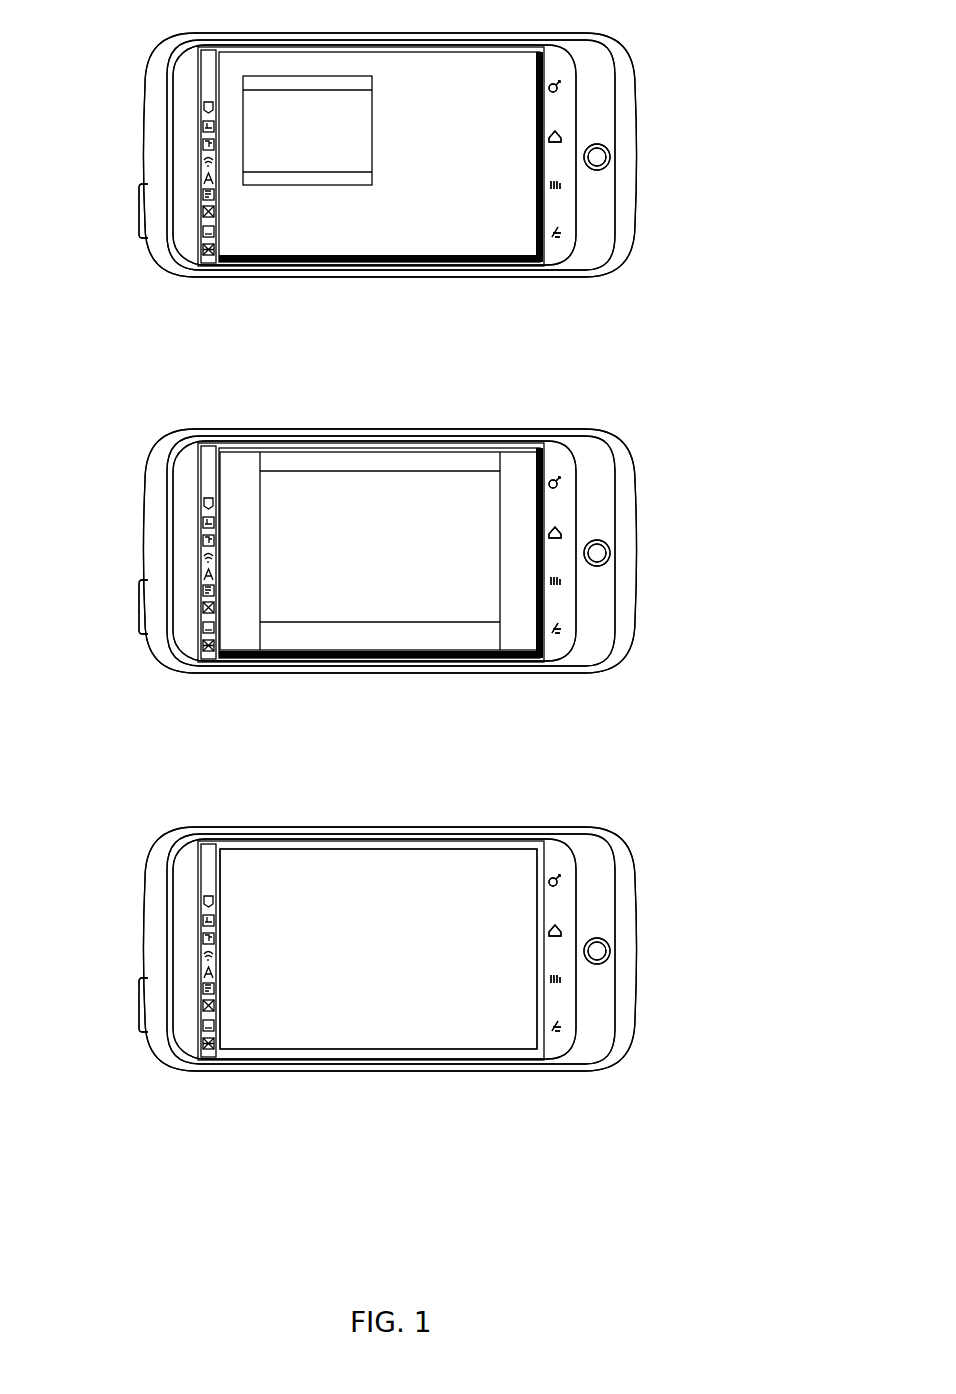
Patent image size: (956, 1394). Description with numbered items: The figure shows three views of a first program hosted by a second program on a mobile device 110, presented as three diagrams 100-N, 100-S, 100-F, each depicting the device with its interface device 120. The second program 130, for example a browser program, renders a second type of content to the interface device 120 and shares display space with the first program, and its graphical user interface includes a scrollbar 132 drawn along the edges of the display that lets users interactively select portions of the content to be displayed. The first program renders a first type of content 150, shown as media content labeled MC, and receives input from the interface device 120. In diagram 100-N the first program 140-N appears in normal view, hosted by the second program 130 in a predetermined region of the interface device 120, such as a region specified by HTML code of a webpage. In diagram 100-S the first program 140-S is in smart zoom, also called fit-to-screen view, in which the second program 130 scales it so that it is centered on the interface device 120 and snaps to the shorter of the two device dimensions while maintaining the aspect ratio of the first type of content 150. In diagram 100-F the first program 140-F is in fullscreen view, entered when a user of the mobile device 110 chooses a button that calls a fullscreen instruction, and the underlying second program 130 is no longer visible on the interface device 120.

The mobile device 110 is at (151, 62).
The interface device 120 is at (221, 264).
The second program 130 is at (521, 53).
The scrollbar 132 is at (544, 236).
The first program in normal view 140-N is at (303, 77).
The first program in smart zoom view 140-S is at (257, 460).
The first program in fullscreen view 140-F is at (257, 852).
The first type of content 150 is at (374, 117).
The diagram of normal view 100-N is at (697, 157).
The diagram of smart zoom view 100-S is at (697, 513).
The diagram of fullscreen view 100-F is at (697, 941).